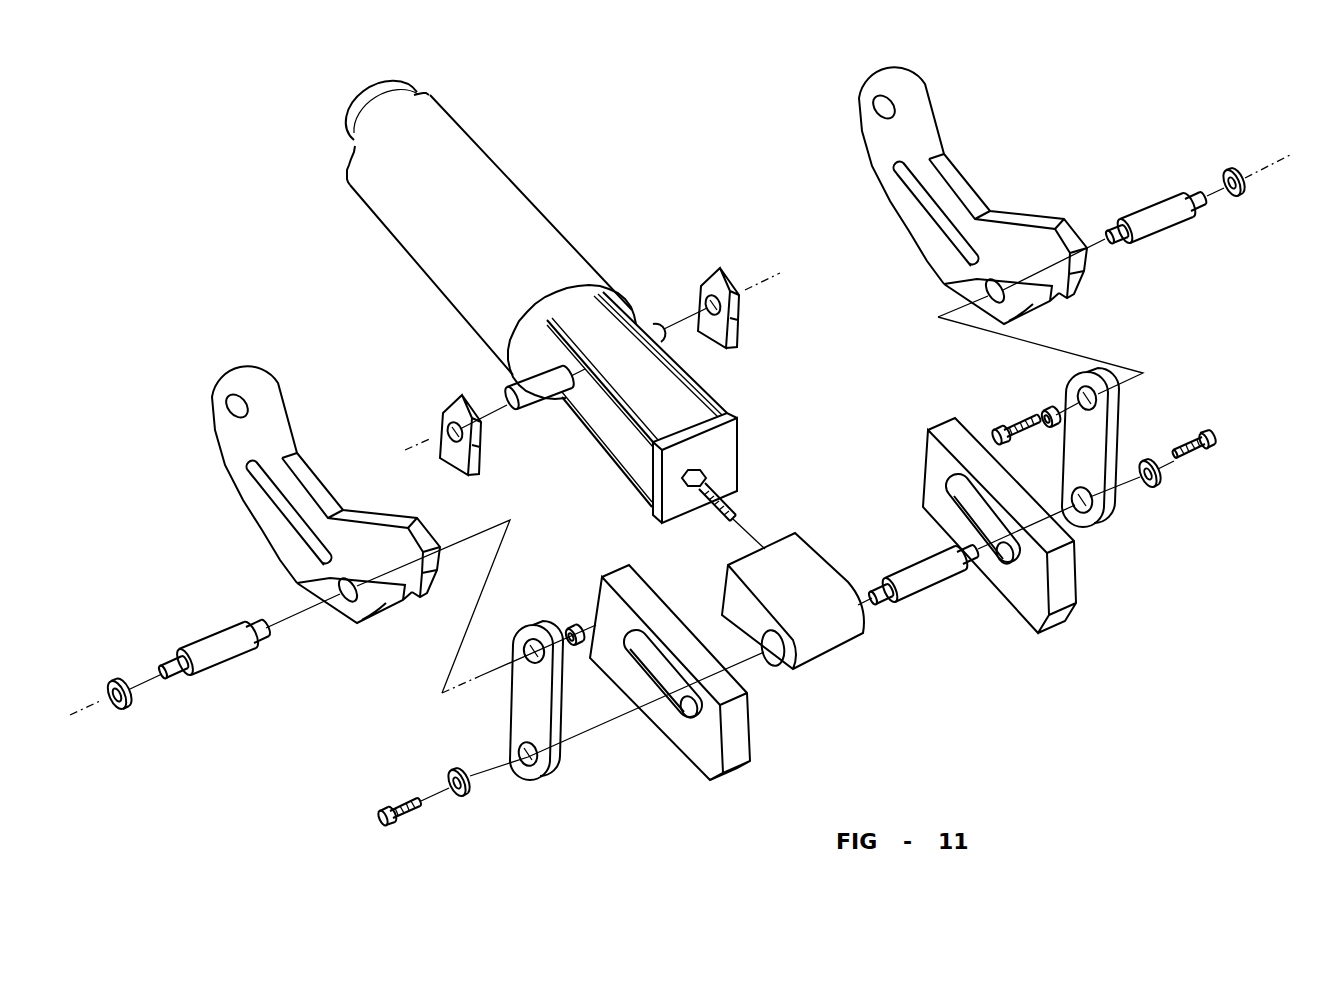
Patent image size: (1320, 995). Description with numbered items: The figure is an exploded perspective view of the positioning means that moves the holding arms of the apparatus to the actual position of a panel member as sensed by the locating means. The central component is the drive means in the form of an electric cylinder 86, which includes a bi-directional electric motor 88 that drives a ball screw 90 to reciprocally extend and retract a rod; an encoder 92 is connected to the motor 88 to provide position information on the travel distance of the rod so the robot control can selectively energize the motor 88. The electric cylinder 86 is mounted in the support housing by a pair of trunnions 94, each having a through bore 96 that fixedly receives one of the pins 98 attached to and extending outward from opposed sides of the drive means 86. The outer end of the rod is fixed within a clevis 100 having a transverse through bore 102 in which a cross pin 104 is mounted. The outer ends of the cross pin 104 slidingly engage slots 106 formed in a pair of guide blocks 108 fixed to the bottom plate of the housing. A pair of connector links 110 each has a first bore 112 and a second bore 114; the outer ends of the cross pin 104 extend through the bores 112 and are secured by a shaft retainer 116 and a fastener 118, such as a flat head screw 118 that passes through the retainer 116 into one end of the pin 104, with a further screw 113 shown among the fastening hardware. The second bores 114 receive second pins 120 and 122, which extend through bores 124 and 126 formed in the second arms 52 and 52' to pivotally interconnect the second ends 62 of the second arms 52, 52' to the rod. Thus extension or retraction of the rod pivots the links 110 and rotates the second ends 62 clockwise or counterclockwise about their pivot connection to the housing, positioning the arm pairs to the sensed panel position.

The second arm 52 is at (290, 506).
The second arm 52' is at (1074, 226).
The second end 62 is at (403, 587).
The electric cylinder 86 is at (535, 231).
The bi-directional electric motor 88 is at (477, 153).
The ball screw 90 is at (625, 352).
The encoder 92 is at (357, 124).
The trunnion 94 is at (453, 396).
The through bore 96 is at (452, 429).
The pin 98 is at (532, 406).
The clevis 100 is at (855, 630).
The transverse through bore 102 is at (772, 650).
The cross pin 104 is at (907, 570).
The slot 106 is at (703, 760).
The guide block 108 is at (753, 735).
The connector link 110 is at (560, 758).
The bore 112 is at (533, 771).
The screw 113 is at (1213, 438).
The second bore 114 is at (524, 645).
The shaft retainer 116 is at (466, 798).
The fastener 118 is at (385, 813).
The second pin 120 is at (208, 660).
The second pin 122 is at (1172, 217).
The bore 124 is at (340, 588).
The bore 126 is at (1025, 302).